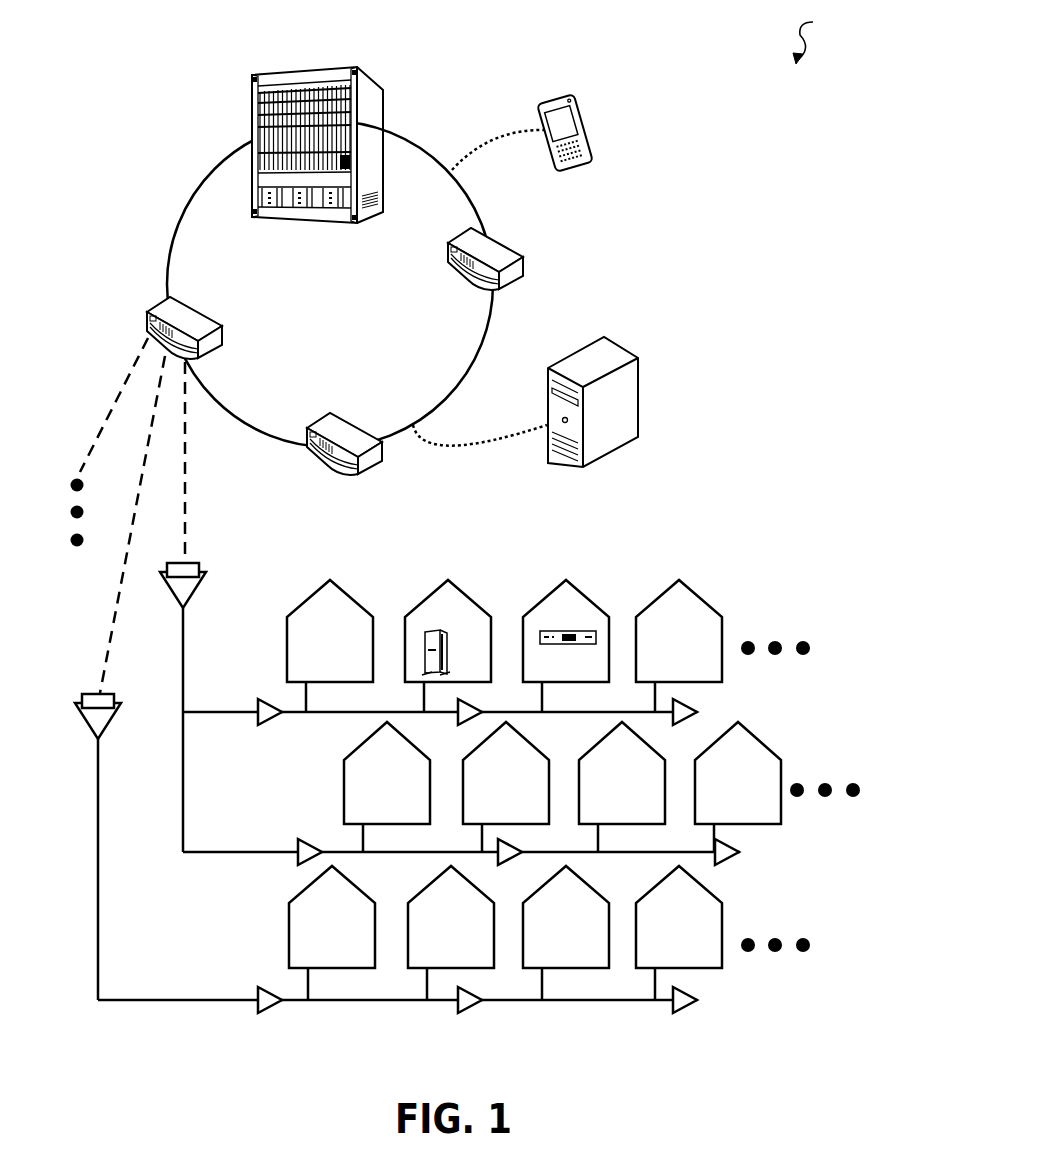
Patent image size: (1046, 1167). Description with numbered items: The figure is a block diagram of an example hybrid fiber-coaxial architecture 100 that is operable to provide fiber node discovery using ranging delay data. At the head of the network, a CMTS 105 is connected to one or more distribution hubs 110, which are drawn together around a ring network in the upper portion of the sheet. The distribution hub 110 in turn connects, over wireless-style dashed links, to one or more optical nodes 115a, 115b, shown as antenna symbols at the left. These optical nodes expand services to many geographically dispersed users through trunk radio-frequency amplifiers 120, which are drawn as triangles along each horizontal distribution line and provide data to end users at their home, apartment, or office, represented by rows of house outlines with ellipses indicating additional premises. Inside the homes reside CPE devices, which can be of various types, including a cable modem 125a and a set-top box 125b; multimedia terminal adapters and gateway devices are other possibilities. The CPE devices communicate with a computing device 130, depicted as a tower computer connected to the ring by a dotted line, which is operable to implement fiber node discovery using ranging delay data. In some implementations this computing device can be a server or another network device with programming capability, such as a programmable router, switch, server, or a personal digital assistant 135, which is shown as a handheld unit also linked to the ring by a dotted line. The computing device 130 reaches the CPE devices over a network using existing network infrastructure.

The architecture 100 is at (820, 39).
The CMTS 105 is at (313, 70).
The distribution hub 110 is at (196, 306).
The optical node 115a is at (200, 563).
The optical node 115b is at (107, 694).
The trunk radio-frequency amplifier 120 is at (272, 724).
The cable modem 125a is at (443, 628).
The set-top box 125b is at (568, 628).
The computing device 130 is at (620, 345).
The personal digital assistant 135 is at (583, 108).